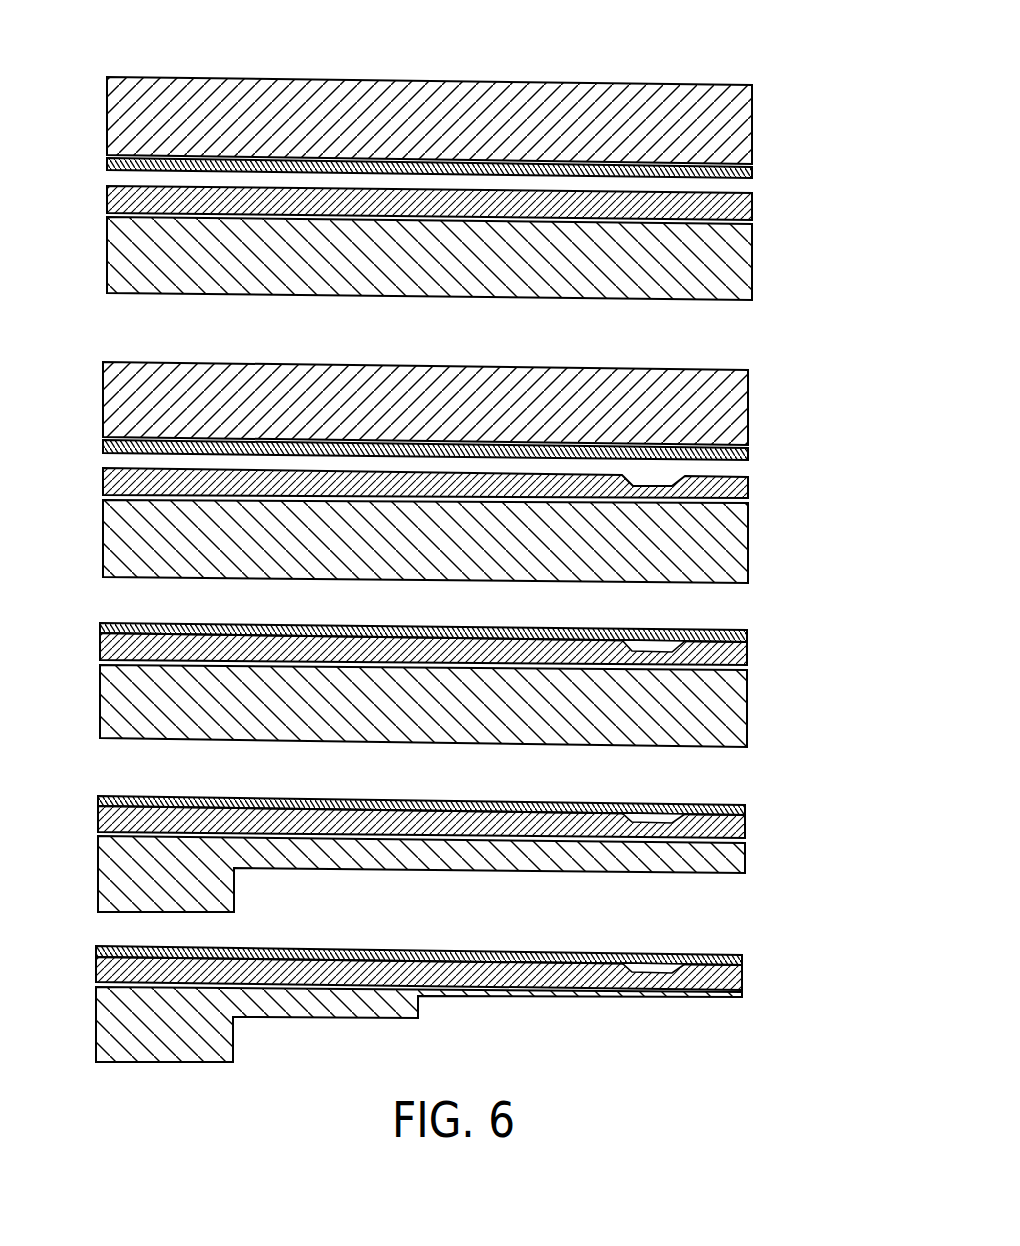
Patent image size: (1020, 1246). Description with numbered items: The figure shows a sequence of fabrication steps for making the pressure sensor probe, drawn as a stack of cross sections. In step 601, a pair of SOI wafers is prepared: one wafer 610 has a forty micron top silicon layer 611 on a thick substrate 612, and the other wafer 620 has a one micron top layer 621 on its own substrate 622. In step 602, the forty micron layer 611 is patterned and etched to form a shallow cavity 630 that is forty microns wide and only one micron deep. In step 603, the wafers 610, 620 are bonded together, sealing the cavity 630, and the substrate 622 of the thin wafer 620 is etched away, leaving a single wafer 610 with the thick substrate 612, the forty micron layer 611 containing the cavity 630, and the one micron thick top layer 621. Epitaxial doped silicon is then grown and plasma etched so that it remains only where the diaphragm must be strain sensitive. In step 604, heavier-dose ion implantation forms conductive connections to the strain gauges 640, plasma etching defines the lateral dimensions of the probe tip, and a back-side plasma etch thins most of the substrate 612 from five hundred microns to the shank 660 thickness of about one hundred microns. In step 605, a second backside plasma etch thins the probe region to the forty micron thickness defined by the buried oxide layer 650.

The step 601 is at (471, 180).
The step 602 is at (497, 475).
The step 603 is at (782, 698).
The step 604 is at (494, 826).
The step 605 is at (490, 1001).
The wafer 610 is at (449, 266).
The top silicon layer 611 is at (107, 196).
The substrate 612 is at (115, 270).
The wafer 620 is at (447, 96).
The top layer 621 is at (107, 165).
The substrate 622 is at (107, 93).
The shallow cavity 630 is at (657, 478).
The strain gauges 640 is at (623, 802).
The buried oxide layer 650 is at (657, 992).
The shank 660 is at (338, 857).